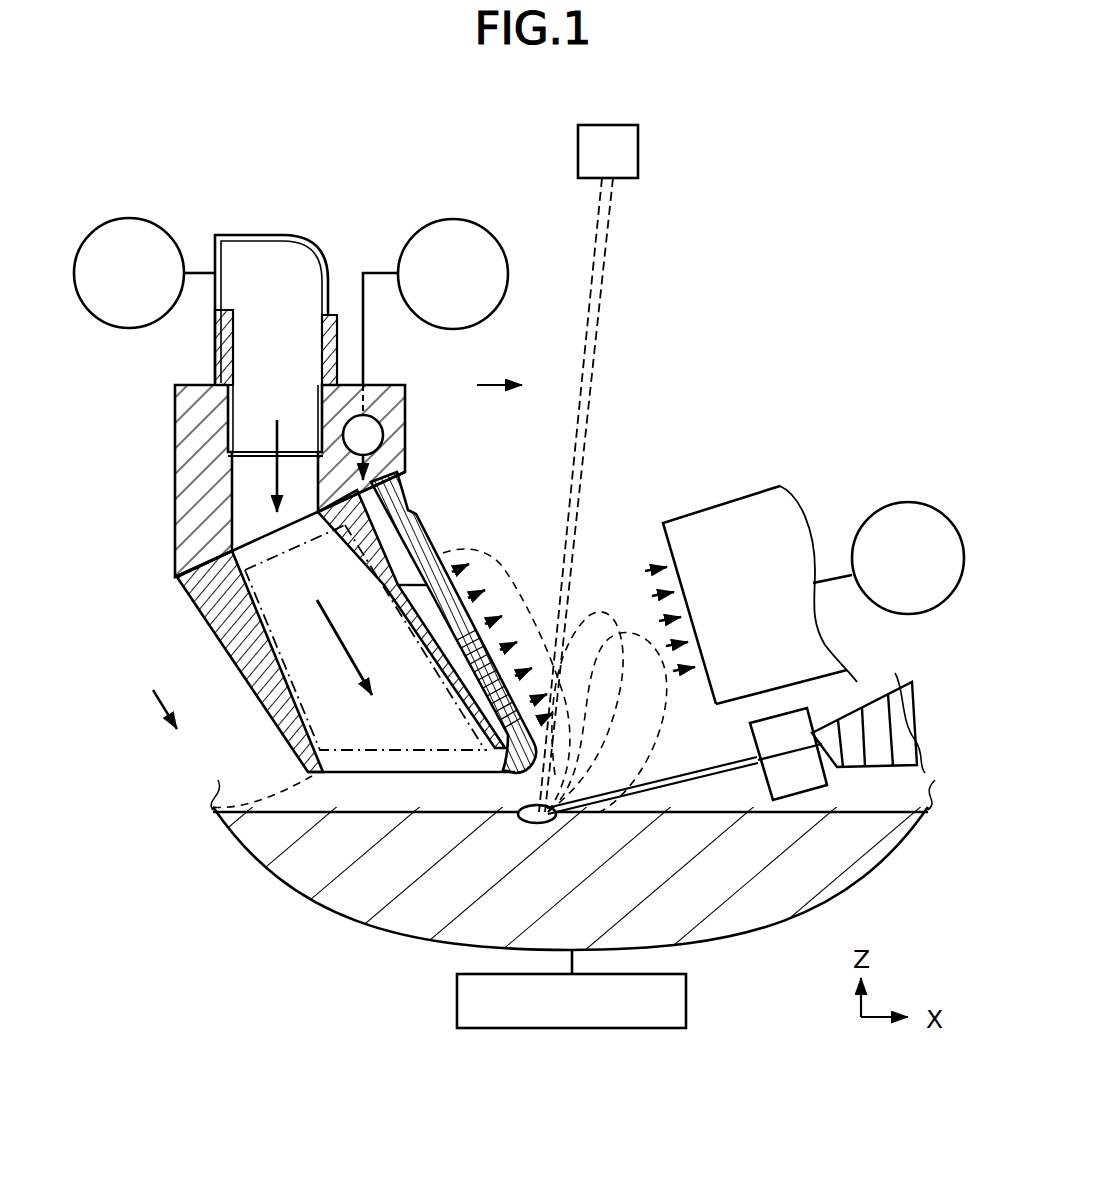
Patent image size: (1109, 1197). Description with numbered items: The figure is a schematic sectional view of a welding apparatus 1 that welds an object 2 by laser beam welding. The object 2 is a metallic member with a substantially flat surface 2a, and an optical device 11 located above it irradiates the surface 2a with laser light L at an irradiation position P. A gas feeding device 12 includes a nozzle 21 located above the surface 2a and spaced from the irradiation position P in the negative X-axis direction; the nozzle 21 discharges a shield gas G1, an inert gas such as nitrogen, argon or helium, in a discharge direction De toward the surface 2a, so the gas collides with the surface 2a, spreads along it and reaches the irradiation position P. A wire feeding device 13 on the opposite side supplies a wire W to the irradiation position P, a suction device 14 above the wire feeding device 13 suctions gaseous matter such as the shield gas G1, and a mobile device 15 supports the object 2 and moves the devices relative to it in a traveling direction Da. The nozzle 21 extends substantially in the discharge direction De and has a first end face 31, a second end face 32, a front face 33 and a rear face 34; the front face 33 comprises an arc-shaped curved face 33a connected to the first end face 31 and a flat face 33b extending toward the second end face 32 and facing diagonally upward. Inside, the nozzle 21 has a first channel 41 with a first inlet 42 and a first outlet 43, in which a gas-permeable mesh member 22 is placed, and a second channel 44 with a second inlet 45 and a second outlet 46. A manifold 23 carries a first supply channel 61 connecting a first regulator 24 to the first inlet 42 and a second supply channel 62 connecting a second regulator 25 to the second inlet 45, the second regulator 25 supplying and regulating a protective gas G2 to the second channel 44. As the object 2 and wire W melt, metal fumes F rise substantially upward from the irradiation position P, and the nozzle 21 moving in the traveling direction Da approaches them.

The welding apparatus 1 is at (836, 172).
The object 2 is at (287, 878).
The surface 2a is at (925, 812).
The optical device 11 is at (640, 150).
The gas feeding device 12 is at (295, 231).
The wire feeding device 13 is at (907, 708).
The suction device 14 is at (747, 496).
The mobile device 15 is at (563, 1032).
The nozzle 21 is at (217, 603).
The mesh member 22 is at (262, 615).
The manifold 23 is at (187, 470).
The first regulator 24 is at (136, 234).
The second regulator 25 is at (453, 233).
The first end face 31 is at (310, 778).
The second end face 32 is at (207, 557).
The front face 33 is at (426, 529).
The curved face 33a is at (540, 756).
The flat face 33b is at (437, 555).
The rear face 34 is at (227, 649).
The first channel 41 is at (265, 583).
The first inlet 42 is at (230, 518).
The first outlet 43 is at (368, 776).
The second channel 44 is at (392, 526).
The second inlet 45 is at (413, 458).
The second outlet 46 is at (447, 594).
The first supply channel 61 is at (250, 480).
The second supply channel 62 is at (372, 418).
The laser light L is at (608, 236).
The irradiation position P is at (530, 810).
The wire W is at (723, 768).
The metal fumes F is at (620, 620).
The shield gas G1 is at (257, 802).
The protective gas G2 is at (480, 552).
The traveling direction Da is at (503, 383).
The discharge direction De is at (153, 706).